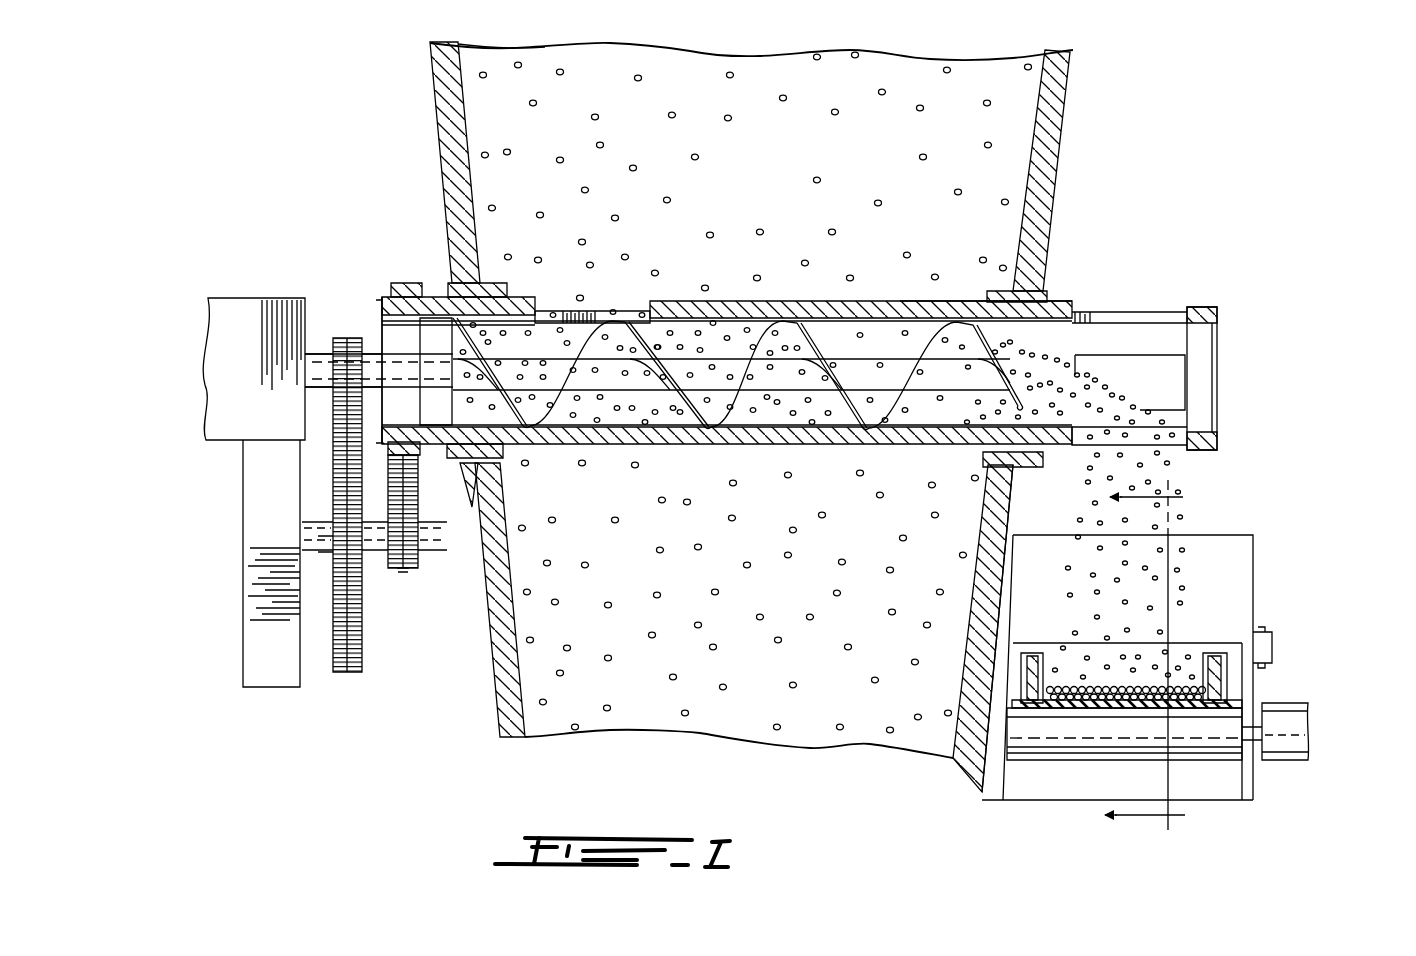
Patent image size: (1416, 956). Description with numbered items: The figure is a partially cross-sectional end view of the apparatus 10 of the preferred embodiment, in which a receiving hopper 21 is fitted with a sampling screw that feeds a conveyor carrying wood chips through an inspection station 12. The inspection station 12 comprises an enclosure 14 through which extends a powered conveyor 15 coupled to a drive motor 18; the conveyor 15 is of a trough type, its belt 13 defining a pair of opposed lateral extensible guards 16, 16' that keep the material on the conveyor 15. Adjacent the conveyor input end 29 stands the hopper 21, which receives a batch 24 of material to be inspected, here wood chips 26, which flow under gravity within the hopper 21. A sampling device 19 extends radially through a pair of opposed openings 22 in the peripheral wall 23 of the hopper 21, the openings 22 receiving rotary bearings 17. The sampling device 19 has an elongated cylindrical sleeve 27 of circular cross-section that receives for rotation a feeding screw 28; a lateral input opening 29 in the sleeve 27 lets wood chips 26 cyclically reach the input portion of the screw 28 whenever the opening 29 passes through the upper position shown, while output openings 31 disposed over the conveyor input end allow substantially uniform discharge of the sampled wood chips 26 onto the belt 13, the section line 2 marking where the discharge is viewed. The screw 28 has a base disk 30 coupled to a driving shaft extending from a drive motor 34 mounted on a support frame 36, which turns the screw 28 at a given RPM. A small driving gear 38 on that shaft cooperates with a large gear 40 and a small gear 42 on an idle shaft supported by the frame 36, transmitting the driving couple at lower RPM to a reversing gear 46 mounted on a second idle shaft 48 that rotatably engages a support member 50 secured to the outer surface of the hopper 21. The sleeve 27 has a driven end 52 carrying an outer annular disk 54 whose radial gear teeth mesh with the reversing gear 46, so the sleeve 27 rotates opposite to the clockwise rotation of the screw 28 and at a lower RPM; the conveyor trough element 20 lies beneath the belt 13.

The apparatus 10 is at (1288, 484).
The inspection station 12 is at (1258, 547).
The belt 13 is at (1187, 714).
The enclosure 14 is at (1242, 618).
The powered conveyor 15 is at (1024, 760).
The lateral extensible guard 16 is at (1025, 644).
The lateral extensible guard 16' is at (1262, 636).
The rotary bearing 17 is at (444, 283).
The drive motor 18 is at (1295, 735).
The sampling device 19 is at (880, 279).
The roller trough 20 is at (1212, 737).
The hopper 21 is at (1085, 90).
The opening 22 is at (438, 284).
The peripheral wall 23 is at (440, 143).
The batch 24 is at (718, 185).
The wood chips 26 is at (1106, 372).
The cylindrical sleeve 27 is at (948, 301).
The feeding screw 28 is at (540, 404).
The lateral input opening 29 is at (560, 278).
The base disk 30 is at (440, 338).
The output opening 31 is at (1167, 395).
The drive motor 34 is at (232, 348).
The support frame 36 is at (263, 647).
The small driving gear 38 is at (347, 338).
The large gear 40 is at (347, 674).
The small gear 42 is at (323, 540).
The reversing gear 46 is at (393, 467).
The second idle shaft 48 is at (423, 472).
The support member 50 is at (466, 497).
The driven end 52 is at (381, 302).
The outer annular disk 54 is at (413, 285).
The section line 2- 2 is at (1153, 659).